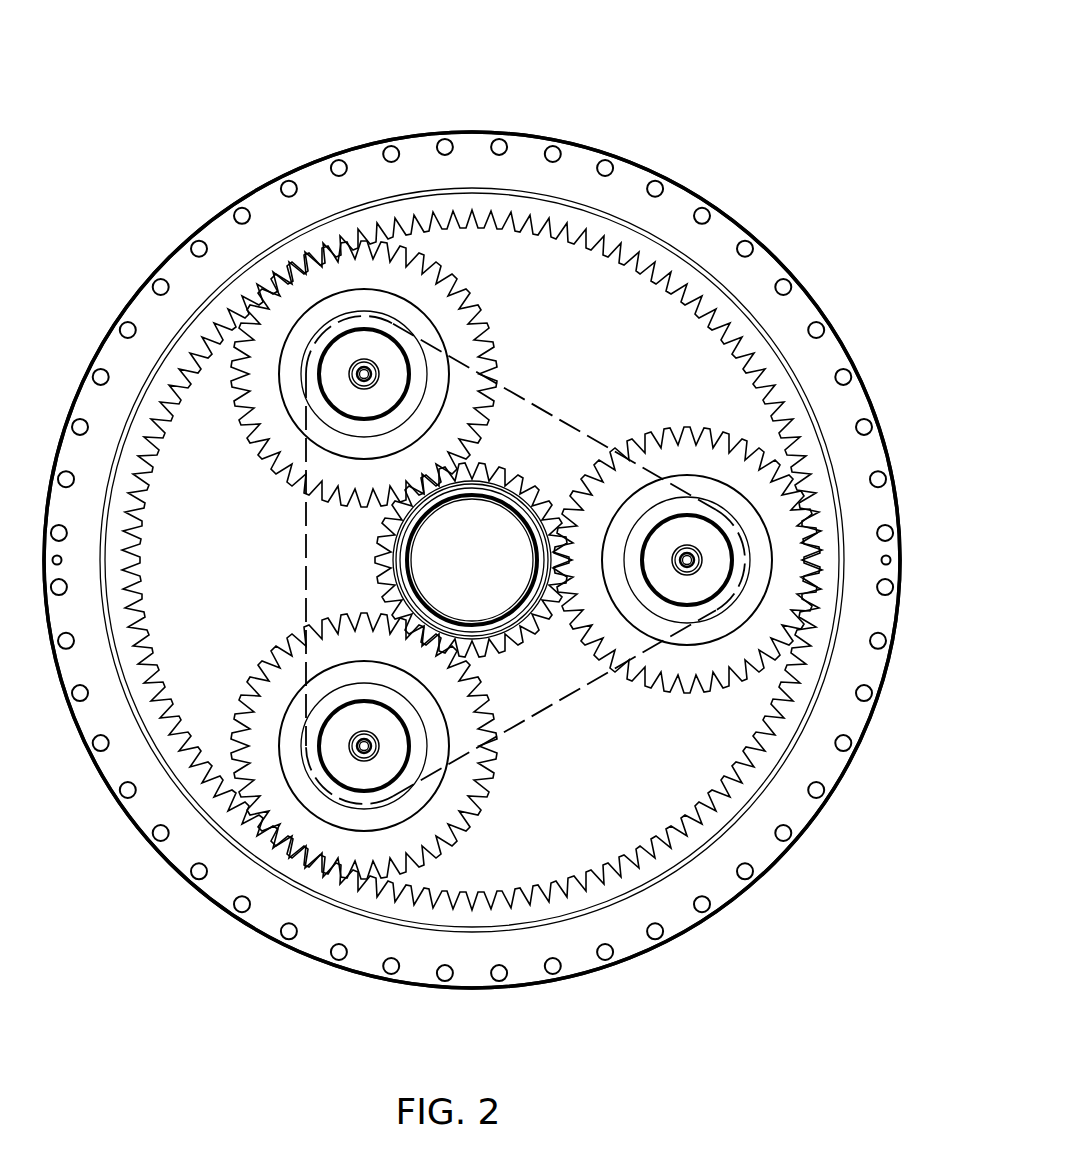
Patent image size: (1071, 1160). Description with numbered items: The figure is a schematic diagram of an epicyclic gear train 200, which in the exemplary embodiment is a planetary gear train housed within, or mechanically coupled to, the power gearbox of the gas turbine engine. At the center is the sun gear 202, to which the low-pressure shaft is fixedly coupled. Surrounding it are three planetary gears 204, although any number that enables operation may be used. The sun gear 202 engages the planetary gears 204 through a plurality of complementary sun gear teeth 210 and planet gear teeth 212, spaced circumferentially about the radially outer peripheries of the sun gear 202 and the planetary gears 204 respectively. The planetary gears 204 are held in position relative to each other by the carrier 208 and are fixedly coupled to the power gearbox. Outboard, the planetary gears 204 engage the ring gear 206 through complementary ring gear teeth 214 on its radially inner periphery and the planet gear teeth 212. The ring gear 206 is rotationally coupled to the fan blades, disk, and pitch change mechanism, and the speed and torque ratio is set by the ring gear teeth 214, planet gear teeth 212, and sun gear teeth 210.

The epicyclic gear train 200 is at (663, 62).
The sun gear 202 is at (508, 598).
The planetary gears 204 is at (333, 320).
The ring gear 206 is at (774, 249).
The carrier 208 is at (552, 706).
The sun gear teeth 210 is at (380, 558).
The planet gear teeth 212 is at (505, 357).
The ring gear teeth 214 is at (710, 320).